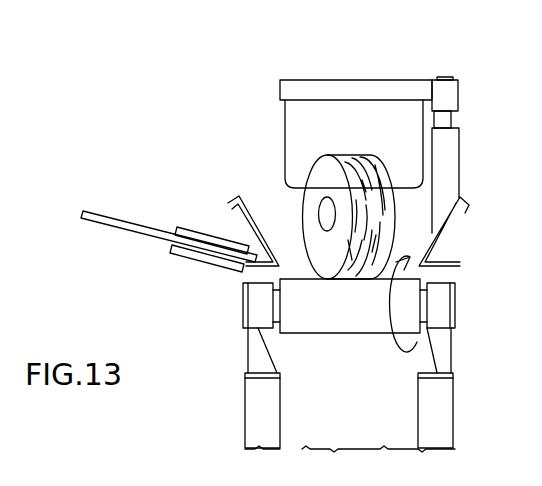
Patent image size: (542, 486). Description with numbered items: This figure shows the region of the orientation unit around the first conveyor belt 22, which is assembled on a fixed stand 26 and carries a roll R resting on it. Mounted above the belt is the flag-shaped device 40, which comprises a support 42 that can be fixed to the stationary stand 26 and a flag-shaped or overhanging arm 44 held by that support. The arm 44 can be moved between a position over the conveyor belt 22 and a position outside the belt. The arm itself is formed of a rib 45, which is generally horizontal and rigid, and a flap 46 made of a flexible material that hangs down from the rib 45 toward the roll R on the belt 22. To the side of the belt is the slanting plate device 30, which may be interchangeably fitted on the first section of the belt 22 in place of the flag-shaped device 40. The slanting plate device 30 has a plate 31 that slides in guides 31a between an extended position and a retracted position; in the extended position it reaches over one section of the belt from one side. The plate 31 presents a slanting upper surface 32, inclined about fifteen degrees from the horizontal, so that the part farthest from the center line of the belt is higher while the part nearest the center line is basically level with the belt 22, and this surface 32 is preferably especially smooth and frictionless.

The flag-shaped device 40 is at (478, 67).
The flag-shaped arm 44 is at (351, 63).
The rib 45 is at (388, 88).
The flap 46 is at (313, 133).
The support 42 is at (447, 148).
The roll R is at (317, 208).
The first conveyor belt 22 is at (305, 300).
The fixed stand 26 is at (432, 422).
The slanting plate device 30 is at (154, 199).
The plate 31 is at (147, 237).
The guides 31a is at (197, 238).
The slanting upper surface 32 is at (104, 202).